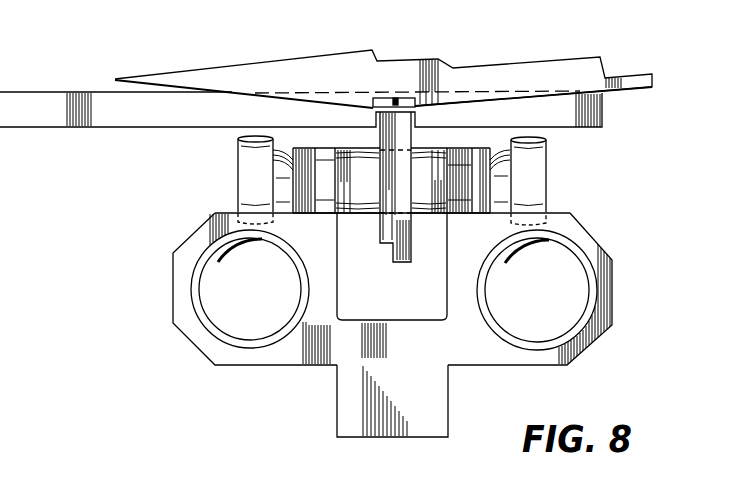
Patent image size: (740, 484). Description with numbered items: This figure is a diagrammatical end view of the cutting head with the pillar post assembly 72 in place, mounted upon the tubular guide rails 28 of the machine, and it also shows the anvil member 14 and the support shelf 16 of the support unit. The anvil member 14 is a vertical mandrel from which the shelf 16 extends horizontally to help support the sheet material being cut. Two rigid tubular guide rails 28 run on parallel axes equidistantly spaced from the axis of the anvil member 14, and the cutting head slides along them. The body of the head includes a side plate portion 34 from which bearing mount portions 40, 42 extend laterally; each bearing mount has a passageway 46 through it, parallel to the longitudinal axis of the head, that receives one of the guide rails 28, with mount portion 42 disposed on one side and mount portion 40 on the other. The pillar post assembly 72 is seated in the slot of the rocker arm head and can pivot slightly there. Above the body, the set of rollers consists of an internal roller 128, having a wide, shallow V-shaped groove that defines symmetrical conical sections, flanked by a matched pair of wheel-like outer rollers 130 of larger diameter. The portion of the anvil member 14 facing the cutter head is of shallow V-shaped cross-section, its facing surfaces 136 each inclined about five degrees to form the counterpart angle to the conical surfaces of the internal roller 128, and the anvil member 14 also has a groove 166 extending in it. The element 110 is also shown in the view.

The anvil member 14 is at (483, 78).
The support shelf 16 is at (48, 108).
The facing surfaces 136 is at (292, 101).
The groove 166 is at (393, 100).
The internal roller 128 is at (334, 172).
The outer rollers 130 is at (538, 178).
The side plate portion 34 is at (463, 178).
The pillar post assembly 72 is at (381, 252).
The tubular guide rails 28 is at (197, 283).
The passageway 46 is at (207, 330).
The bearing mount portion 40 is at (248, 357).
The bearing mount portion 42 is at (583, 342).
The mounting stem 110 is at (427, 423).